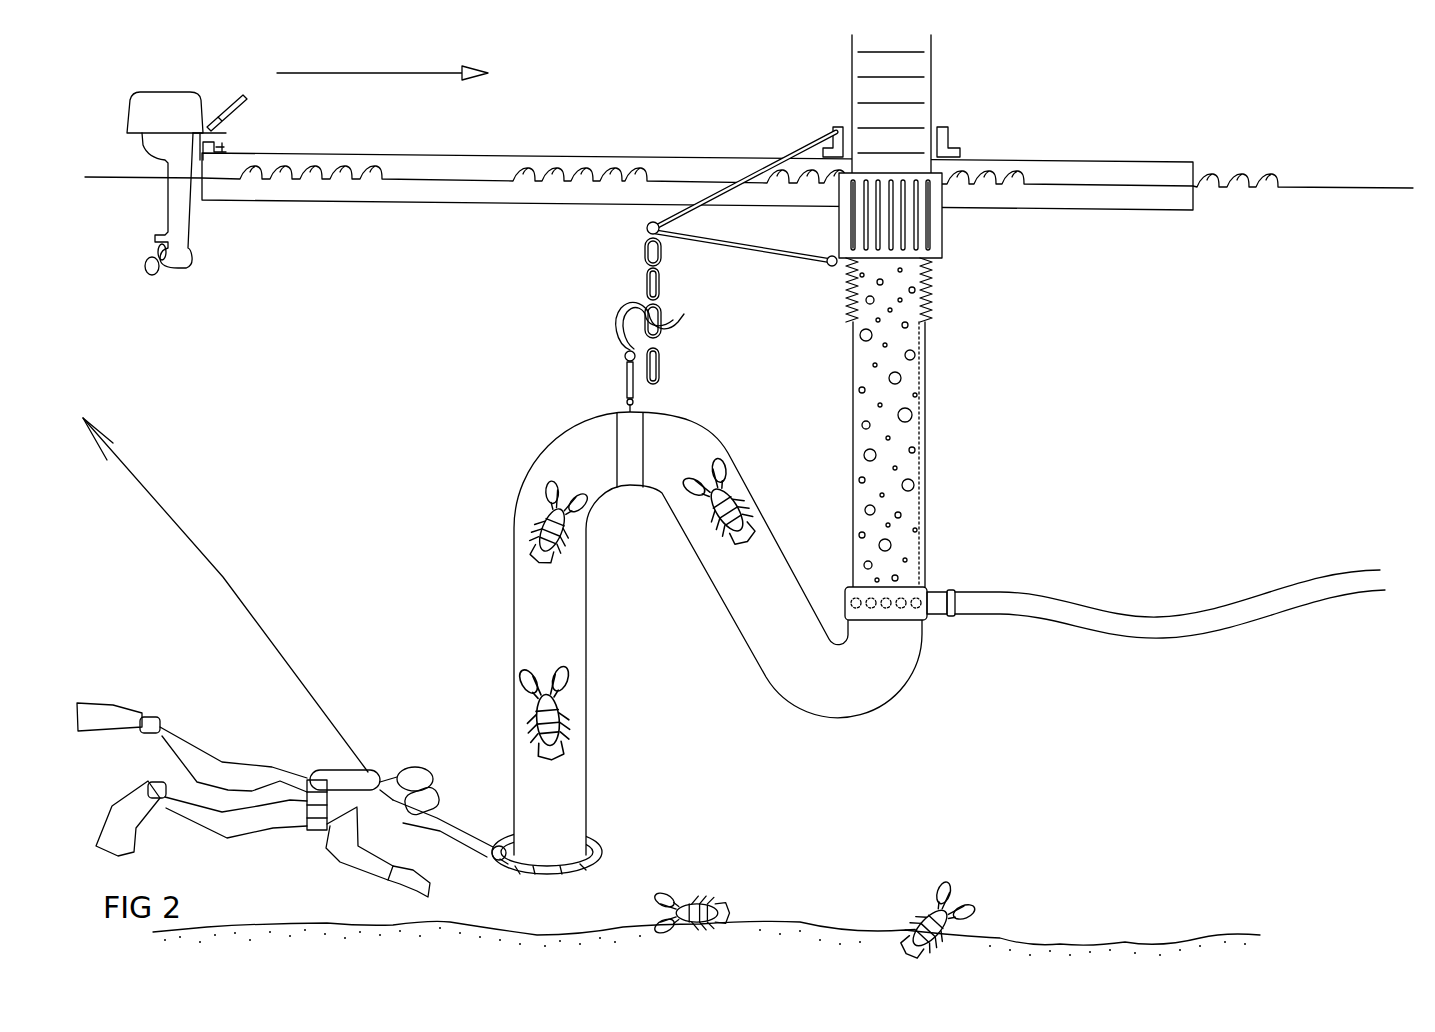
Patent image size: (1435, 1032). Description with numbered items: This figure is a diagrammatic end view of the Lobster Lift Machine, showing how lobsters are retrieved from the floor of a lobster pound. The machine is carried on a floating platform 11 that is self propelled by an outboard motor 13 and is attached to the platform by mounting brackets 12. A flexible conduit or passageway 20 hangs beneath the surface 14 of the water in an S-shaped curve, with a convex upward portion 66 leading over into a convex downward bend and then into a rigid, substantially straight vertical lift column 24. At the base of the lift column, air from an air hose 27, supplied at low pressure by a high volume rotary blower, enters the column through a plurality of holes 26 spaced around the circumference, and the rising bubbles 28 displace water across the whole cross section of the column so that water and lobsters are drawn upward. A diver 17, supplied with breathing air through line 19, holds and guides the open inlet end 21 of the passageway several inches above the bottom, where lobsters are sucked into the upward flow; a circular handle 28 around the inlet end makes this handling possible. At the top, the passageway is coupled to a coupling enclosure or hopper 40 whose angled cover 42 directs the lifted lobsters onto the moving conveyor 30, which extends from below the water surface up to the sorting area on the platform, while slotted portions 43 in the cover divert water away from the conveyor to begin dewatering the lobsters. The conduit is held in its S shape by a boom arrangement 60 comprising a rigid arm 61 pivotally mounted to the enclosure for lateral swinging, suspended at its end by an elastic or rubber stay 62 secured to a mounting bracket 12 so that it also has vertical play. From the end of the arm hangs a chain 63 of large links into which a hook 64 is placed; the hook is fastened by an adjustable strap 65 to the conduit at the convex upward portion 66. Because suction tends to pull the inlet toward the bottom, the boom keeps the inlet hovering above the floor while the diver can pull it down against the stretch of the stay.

The floating platform 11 is at (484, 164).
The mounting brackets 12 is at (836, 125).
The outboard motor 13 is at (164, 89).
The surface of the water 14 is at (1291, 185).
The diver 17 is at (362, 775).
The line 19 is at (269, 629).
The flexible conduit or passageway 20 is at (732, 451).
The inlet end 21 is at (559, 851).
The lift column 24 is at (929, 490).
The holes 26 is at (907, 612).
The air hose 27 is at (999, 596).
The bubbles 28 is at (902, 437).
The conveyor 30 is at (934, 63).
The coupling enclosure or hopper 40 is at (843, 185).
The angled upper surface or cover 42 is at (946, 212).
The slotted portions 43 is at (932, 238).
The boom arrangement 60 is at (603, 227).
The rigid arm 61 is at (777, 246).
The elastic or rubber stay 62 is at (751, 161).
The chain 63 is at (638, 253).
The hook 64 is at (674, 310).
The strap 65 is at (626, 421).
The convex upward portion 66 is at (633, 490).